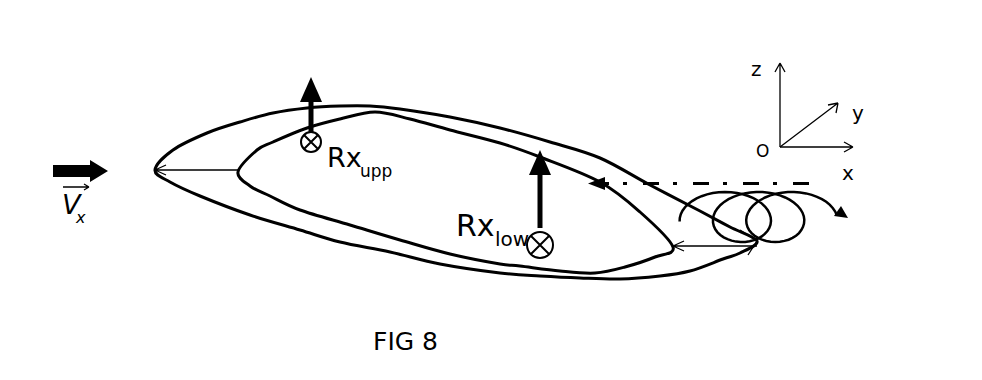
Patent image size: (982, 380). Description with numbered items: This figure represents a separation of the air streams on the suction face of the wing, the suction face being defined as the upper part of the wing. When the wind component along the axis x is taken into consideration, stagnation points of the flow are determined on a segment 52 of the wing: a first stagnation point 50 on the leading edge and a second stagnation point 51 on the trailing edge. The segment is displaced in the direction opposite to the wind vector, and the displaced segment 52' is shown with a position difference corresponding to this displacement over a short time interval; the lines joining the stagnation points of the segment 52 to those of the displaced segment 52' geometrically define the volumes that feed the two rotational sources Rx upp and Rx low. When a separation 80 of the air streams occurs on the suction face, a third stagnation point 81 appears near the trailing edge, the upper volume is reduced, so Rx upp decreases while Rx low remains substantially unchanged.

The first stagnation point 50 is at (155, 168).
The second stagnation point 51 is at (759, 246).
The segment of the wing 52 is at (455, 148).
The displaced segment 52' is at (456, 165).
The separation of the air streams 80 is at (827, 237).
The third stagnation point 81 is at (593, 180).